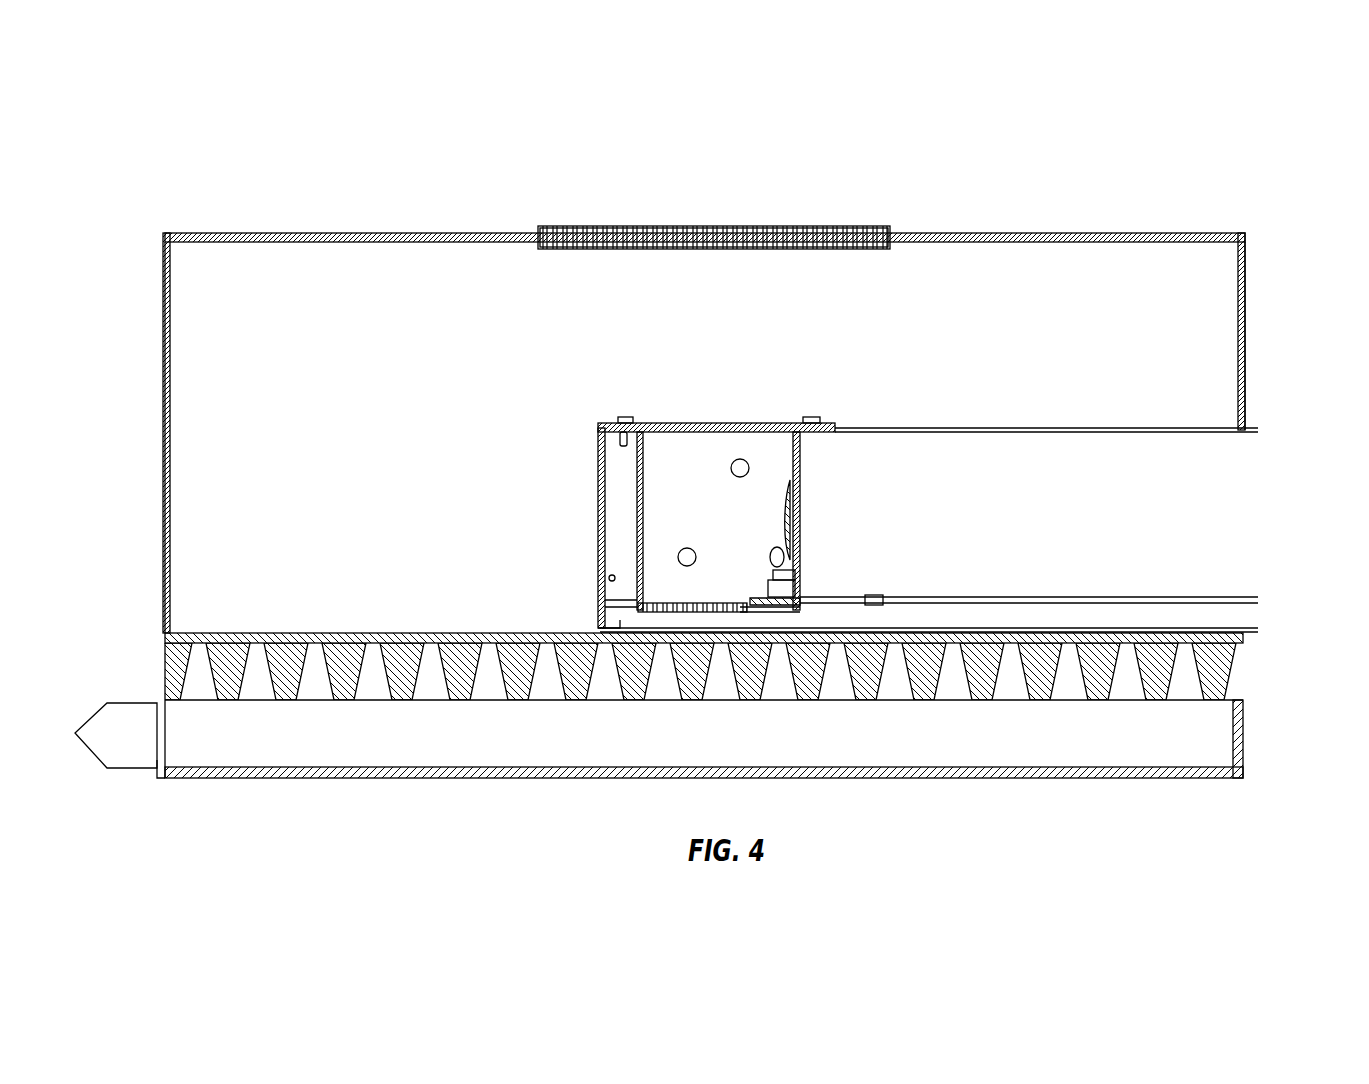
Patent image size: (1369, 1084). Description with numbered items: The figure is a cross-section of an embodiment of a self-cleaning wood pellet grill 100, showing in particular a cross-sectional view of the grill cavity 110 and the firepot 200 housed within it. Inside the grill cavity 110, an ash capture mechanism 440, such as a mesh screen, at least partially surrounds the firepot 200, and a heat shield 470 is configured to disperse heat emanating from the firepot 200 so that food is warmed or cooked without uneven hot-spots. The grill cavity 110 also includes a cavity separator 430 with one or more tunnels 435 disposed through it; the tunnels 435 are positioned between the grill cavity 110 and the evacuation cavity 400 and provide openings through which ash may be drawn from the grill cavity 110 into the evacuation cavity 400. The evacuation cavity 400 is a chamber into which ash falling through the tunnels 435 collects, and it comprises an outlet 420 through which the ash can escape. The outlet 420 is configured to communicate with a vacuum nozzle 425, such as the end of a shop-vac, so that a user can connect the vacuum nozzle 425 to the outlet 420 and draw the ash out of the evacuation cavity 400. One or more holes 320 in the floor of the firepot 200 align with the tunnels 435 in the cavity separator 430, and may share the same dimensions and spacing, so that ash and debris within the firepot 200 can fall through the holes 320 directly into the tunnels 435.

The wood pellet grill 100 is at (1276, 322).
The grill cavity 110 is at (136, 226).
The firepot 200 is at (637, 487).
The holes 320 is at (655, 603).
The evacuation cavity 400 is at (1260, 734).
The outlet 420 is at (160, 766).
The vacuum nozzle 425 is at (110, 705).
The cavity separator 430 is at (166, 640).
The tunnels 435 is at (1126, 633).
The ash capture mechanism 440 is at (1140, 233).
The heat shield 470 is at (752, 226).